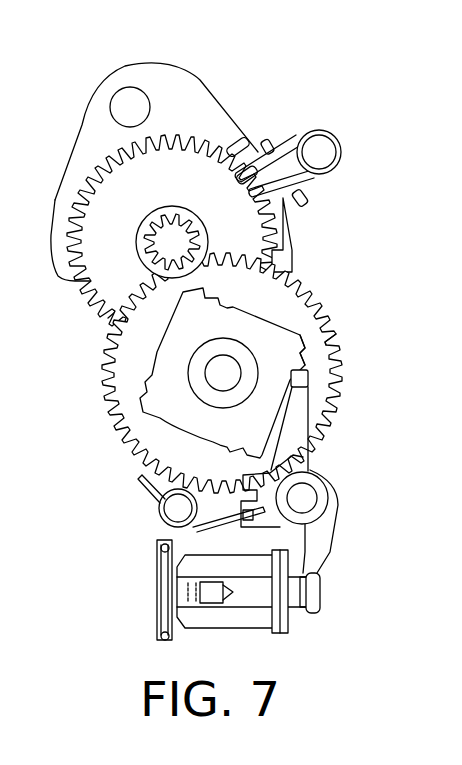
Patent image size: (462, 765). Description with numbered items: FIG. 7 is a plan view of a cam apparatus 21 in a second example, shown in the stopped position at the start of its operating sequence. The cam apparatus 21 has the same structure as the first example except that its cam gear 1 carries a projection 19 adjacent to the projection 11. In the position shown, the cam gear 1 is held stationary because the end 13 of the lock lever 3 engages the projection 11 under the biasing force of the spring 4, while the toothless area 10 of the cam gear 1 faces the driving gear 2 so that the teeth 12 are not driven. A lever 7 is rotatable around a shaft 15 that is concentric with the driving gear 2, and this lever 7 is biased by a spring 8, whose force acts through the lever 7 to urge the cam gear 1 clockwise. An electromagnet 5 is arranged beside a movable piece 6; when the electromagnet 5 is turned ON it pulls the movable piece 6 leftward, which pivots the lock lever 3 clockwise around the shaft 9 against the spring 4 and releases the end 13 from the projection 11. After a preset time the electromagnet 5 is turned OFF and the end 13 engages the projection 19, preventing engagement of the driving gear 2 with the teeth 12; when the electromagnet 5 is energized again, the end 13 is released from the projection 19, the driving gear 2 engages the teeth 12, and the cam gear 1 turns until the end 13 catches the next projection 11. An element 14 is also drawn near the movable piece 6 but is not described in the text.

The cam gear 1 is at (131, 413).
The driving gear 2 is at (147, 220).
The lock lever 3 is at (340, 493).
The spring 4 is at (160, 511).
The electromagnet 5 is at (236, 626).
The movable piece 6 is at (293, 601).
The lever 7 is at (238, 74).
The spring 8 is at (310, 178).
The shaft 9 is at (303, 504).
The toothless area 10 is at (160, 287).
The projection 11 is at (337, 365).
The teeth 12 is at (100, 315).
The end 13 is at (311, 376).
The coupling tab 14 is at (322, 607).
The shaft 15 is at (178, 205).
The projection 19 is at (305, 348).
The cam apparatus 21 is at (163, 148).